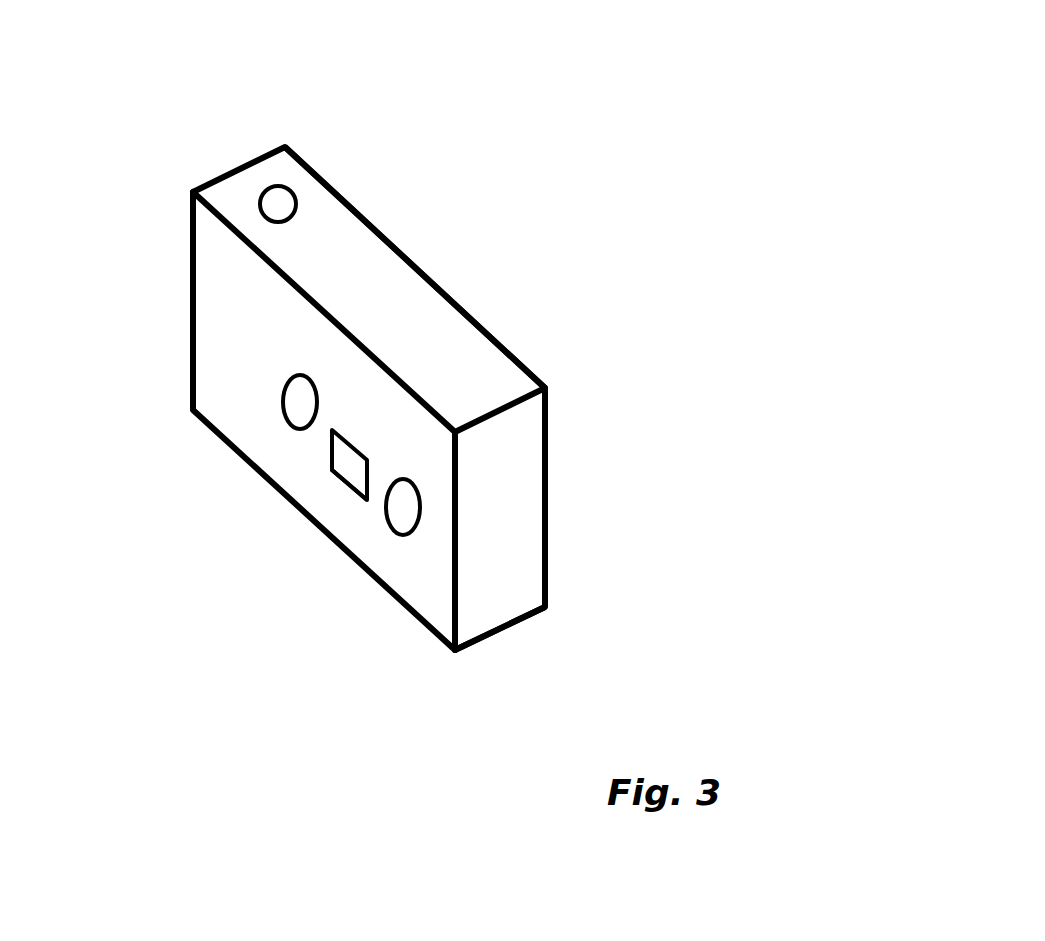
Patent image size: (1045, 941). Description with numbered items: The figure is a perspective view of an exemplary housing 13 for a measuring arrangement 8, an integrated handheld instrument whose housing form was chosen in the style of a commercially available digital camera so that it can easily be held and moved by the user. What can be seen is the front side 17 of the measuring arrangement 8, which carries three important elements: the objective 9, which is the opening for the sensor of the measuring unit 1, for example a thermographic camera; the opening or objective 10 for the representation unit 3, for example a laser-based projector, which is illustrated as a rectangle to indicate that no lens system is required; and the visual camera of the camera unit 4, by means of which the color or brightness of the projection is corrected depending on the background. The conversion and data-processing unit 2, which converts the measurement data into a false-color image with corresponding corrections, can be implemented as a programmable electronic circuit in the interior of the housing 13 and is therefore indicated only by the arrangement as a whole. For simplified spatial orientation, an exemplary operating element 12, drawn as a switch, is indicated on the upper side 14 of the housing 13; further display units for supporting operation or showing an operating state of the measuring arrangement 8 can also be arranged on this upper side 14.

The measuring unit 1 is at (397, 527).
The conversion and data-processing unit 2 is at (575, 470).
The representation unit 3 is at (340, 473).
The visual camera unit 4 is at (290, 415).
The measuring arrangement 8 is at (682, 90).
The objective 9 is at (420, 520).
The objective 10 is at (345, 453).
The operating element 12 is at (278, 202).
The housing 13 is at (488, 368).
The upper side 14 is at (353, 270).
The front side 17 is at (212, 368).